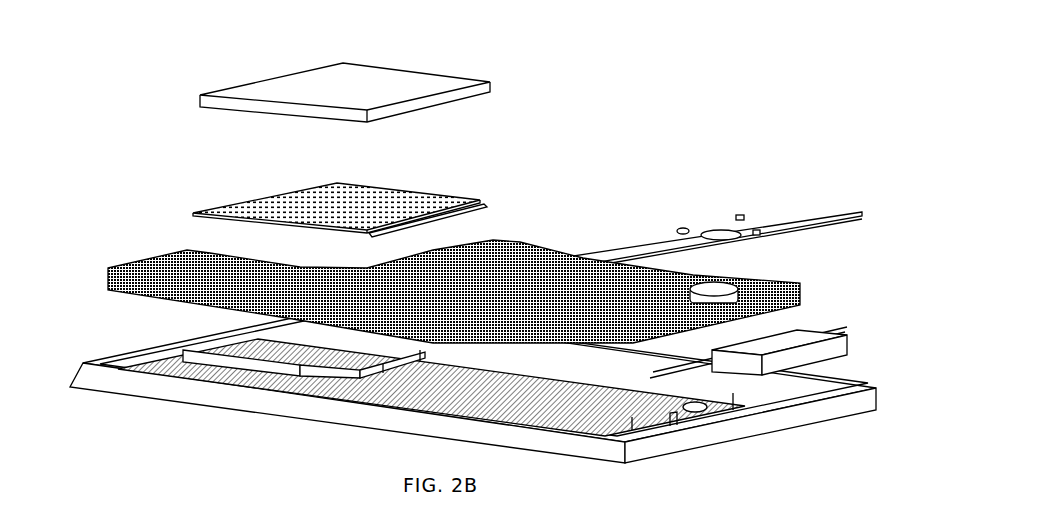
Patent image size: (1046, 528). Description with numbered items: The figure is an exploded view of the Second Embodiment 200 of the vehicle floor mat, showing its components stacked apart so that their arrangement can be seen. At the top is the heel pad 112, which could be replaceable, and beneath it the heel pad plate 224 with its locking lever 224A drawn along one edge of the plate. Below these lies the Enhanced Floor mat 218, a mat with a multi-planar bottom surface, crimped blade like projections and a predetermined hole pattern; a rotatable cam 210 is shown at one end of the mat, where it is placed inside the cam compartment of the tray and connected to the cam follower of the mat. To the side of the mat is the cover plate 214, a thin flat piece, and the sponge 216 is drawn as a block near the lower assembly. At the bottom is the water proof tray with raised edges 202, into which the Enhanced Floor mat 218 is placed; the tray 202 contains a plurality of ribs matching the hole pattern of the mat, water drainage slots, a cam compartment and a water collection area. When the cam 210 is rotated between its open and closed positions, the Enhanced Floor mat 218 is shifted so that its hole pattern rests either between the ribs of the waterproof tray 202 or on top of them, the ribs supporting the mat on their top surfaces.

The Second Embodiment 200 is at (122, 97).
The heel pad 112 is at (390, 88).
The heel pad plate 224 is at (373, 198).
The locking lever 224A is at (403, 225).
The Enhanced Floor mat 218 is at (513, 270).
The cover plate 214 is at (778, 220).
The cam 210 is at (713, 293).
The sponge 216 is at (810, 332).
The waterproof tray 202 is at (212, 397).